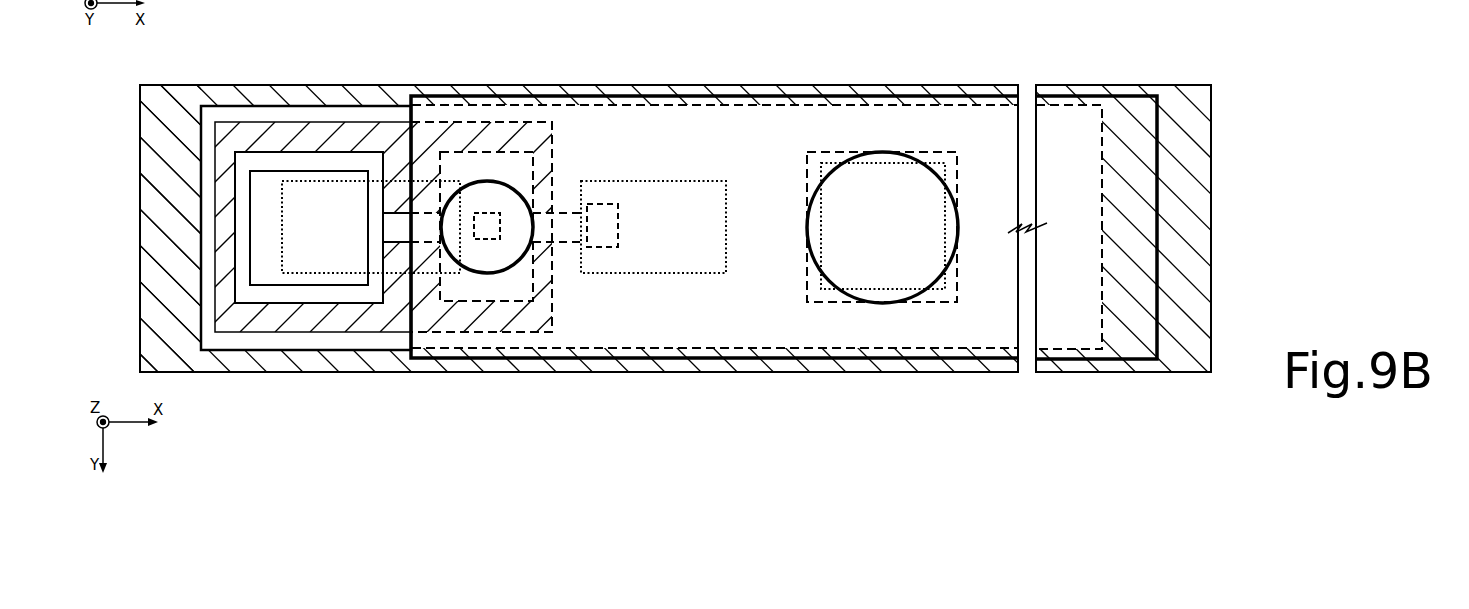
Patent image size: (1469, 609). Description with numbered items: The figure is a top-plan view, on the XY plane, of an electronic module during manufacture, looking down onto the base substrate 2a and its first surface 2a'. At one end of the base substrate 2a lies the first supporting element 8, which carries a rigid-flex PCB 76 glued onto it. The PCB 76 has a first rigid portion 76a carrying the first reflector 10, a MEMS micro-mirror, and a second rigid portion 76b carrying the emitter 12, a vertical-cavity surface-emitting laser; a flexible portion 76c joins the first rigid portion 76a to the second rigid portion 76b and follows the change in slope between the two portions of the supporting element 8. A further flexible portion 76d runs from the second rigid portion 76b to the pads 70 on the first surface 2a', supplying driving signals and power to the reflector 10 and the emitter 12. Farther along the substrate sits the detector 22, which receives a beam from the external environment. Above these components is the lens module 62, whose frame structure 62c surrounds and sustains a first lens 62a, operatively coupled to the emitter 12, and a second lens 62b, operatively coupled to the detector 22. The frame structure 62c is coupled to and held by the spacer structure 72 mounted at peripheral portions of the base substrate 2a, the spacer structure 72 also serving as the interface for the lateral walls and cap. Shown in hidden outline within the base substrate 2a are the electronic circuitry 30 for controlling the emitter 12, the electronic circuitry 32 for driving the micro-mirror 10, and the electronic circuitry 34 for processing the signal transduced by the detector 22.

The base substrate 2a is at (734, 228).
The first surface 2a' is at (734, 228).
The first supporting element 8 is at (227, 143).
The first rigid portion 76a is at (298, 162).
The PCB 76 is at (337, 142).
The first reflector 10 is at (310, 283).
The electronic circuitry 32 is at (353, 268).
The flexible portion 76c is at (397, 228).
The lens module 62 is at (848, 88).
The frame structure 62c is at (737, 135).
The first lens 62a is at (489, 180).
The second rigid portion 76b is at (513, 152).
The emitter 12 is at (487, 233).
The further flexible portion 76d is at (567, 227).
The pads 70 is at (600, 210).
The electronic circuitry 30 is at (653, 254).
The second lens 62b is at (877, 178).
The detector 22 is at (937, 148).
The electronic circuitry 34 is at (872, 271).
The spacer structure 72 is at (1197, 238).